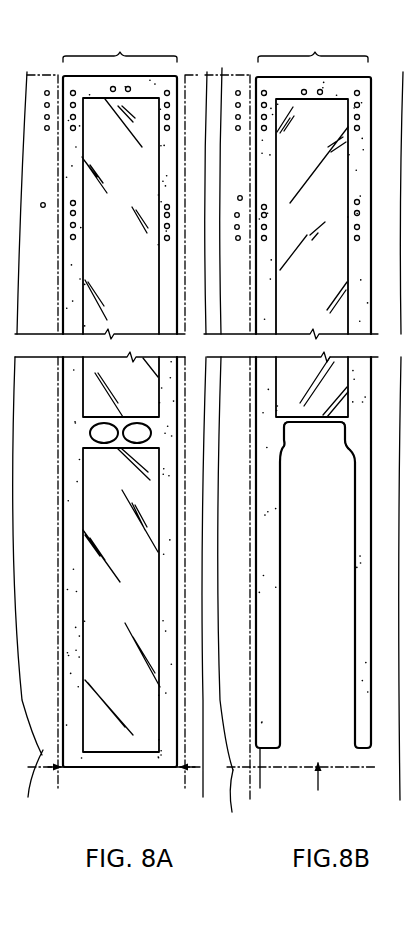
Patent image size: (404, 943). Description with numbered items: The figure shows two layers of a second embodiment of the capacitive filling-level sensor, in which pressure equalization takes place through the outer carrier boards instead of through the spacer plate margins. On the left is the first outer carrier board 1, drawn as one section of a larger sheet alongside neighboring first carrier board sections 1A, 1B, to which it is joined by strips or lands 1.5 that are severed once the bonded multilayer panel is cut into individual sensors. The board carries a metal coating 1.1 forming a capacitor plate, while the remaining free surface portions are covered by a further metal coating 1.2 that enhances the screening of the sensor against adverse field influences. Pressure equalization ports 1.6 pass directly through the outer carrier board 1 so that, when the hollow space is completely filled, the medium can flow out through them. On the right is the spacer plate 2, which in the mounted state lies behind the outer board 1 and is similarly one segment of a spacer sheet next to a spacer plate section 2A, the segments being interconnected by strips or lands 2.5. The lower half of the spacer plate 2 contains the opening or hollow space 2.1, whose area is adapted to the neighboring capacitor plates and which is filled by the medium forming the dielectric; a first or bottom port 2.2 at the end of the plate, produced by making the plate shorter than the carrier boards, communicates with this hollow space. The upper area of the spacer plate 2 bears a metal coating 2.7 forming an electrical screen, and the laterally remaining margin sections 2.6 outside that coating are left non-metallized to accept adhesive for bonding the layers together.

In FIG. 8A, the first outer carrier board 1 is at (180, 66).
In FIG. 8A, the metal coating forming capacitor plate 1.1 is at (110, 622).
In FIG. 8A, the metal coating 1.2 is at (118, 372).
In FIG. 8A, the strips or lands 1.5 is at (114, 418).
In FIG. 8A, the pressure equalization ports 1.6 is at (138, 432).
In FIG. 8A, the first carrier board section 1A is at (28, 450).
In FIG. 8A, the first carrier board section 1B is at (217, 448).
In FIG. 8B, the spacer plate 2 is at (371, 66).
In FIG. 8B, the opening or hollow space 2.1 is at (318, 612).
In FIG. 8B, the first or bottom port 2.2 is at (328, 794).
In FIG. 8B, the strips or lands 2.5 is at (259, 780).
In FIG. 8B, the laterally remaining margin sections 2.6 is at (313, 42).
In FIG. 8B, the metal coating forming electrical screening 2.7 is at (298, 372).
In FIG. 8B, the spacer plate section 2A is at (243, 805).